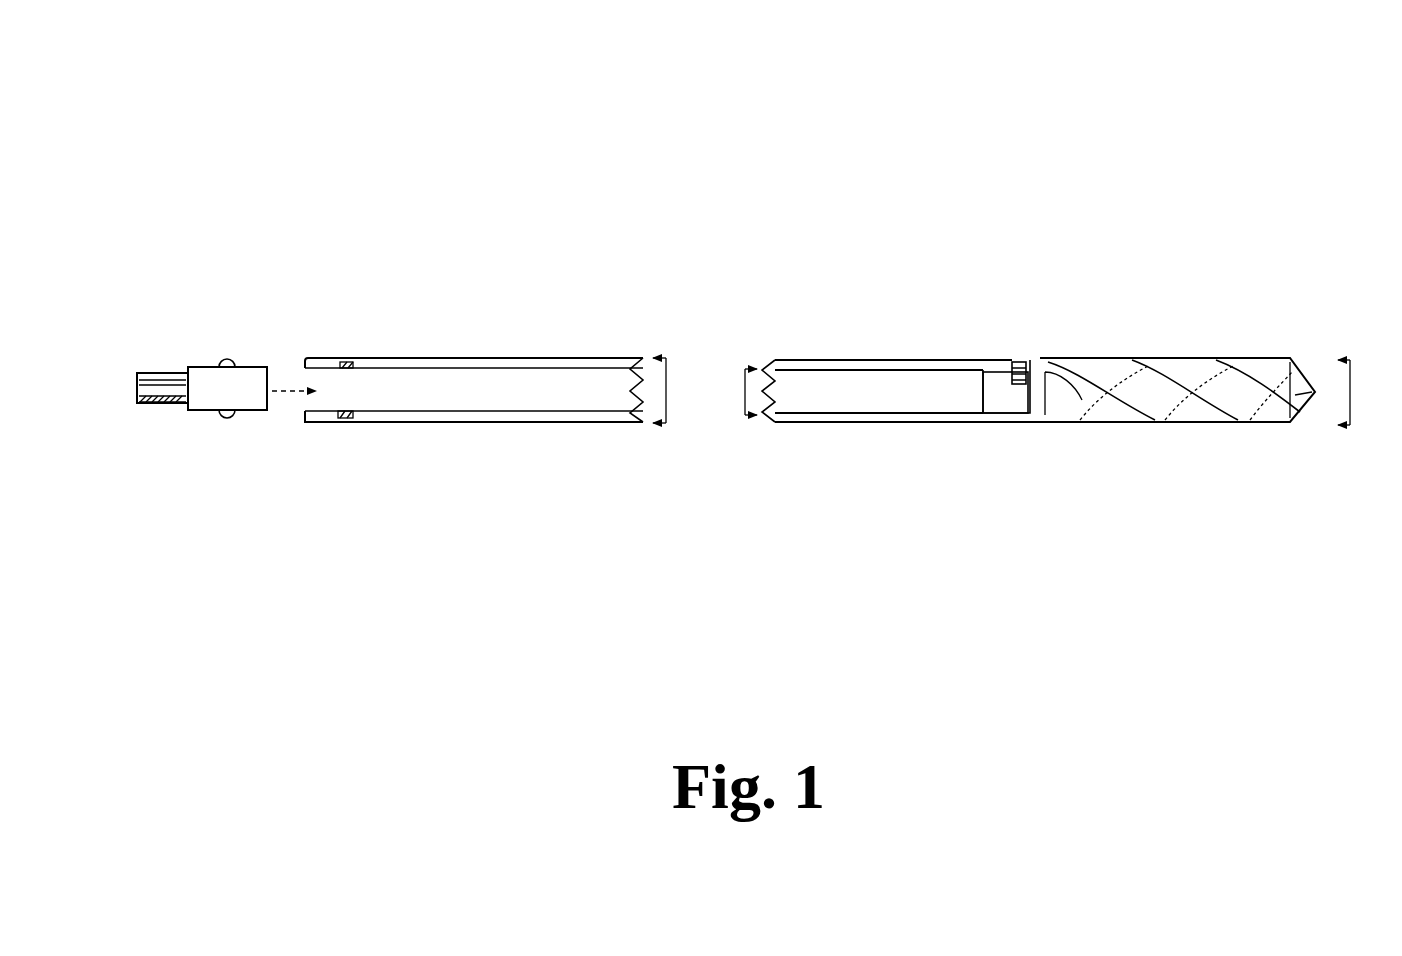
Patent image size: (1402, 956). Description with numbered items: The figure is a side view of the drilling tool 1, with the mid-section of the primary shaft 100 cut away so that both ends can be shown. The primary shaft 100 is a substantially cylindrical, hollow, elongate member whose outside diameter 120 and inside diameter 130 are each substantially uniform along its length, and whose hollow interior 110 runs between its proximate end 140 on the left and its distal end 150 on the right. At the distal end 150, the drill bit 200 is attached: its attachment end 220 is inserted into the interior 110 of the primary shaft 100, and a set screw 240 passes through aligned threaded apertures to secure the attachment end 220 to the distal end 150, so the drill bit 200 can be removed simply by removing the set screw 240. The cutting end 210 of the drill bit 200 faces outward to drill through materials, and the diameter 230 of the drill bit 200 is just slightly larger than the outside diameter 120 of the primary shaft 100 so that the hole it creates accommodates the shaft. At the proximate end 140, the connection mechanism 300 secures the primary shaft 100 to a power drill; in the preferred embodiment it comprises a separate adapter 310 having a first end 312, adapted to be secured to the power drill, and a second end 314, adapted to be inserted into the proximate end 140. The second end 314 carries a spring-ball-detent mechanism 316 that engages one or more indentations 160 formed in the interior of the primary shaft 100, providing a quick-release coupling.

The drilling tool 1 is at (600, 184).
The primary shaft 100 is at (687, 396).
The interior 110 is at (410, 393).
The outside diameter 120 is at (666, 390).
The inside diameter 130 is at (745, 392).
The proximate end 140 is at (320, 358).
The distal end 150 is at (997, 360).
The indentations 160 is at (345, 420).
The drill bit 200 is at (1221, 393).
The cutting end 210 is at (1290, 398).
The attachment end 220 is at (1350, 392).
The diameter 230 is at (1003, 397).
The set screw 240 is at (1022, 365).
The connection mechanism 300 is at (196, 419).
The adapter 310 is at (222, 390).
The first end 312 is at (152, 403).
The second end 314 is at (258, 413).
The spring-ball-detent mechanism 316 is at (225, 416).